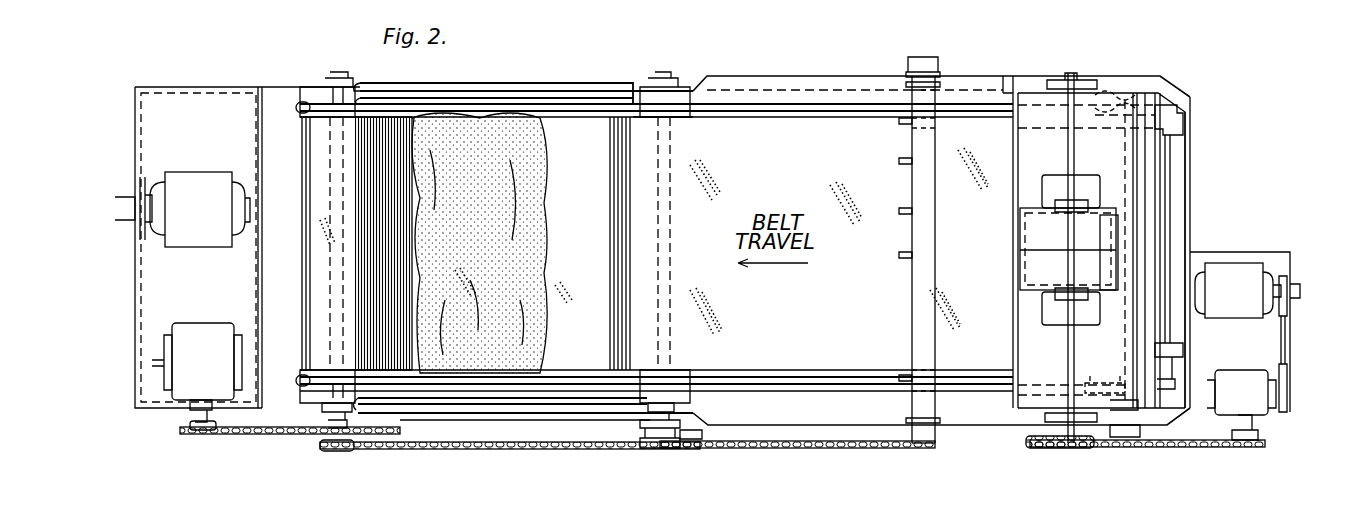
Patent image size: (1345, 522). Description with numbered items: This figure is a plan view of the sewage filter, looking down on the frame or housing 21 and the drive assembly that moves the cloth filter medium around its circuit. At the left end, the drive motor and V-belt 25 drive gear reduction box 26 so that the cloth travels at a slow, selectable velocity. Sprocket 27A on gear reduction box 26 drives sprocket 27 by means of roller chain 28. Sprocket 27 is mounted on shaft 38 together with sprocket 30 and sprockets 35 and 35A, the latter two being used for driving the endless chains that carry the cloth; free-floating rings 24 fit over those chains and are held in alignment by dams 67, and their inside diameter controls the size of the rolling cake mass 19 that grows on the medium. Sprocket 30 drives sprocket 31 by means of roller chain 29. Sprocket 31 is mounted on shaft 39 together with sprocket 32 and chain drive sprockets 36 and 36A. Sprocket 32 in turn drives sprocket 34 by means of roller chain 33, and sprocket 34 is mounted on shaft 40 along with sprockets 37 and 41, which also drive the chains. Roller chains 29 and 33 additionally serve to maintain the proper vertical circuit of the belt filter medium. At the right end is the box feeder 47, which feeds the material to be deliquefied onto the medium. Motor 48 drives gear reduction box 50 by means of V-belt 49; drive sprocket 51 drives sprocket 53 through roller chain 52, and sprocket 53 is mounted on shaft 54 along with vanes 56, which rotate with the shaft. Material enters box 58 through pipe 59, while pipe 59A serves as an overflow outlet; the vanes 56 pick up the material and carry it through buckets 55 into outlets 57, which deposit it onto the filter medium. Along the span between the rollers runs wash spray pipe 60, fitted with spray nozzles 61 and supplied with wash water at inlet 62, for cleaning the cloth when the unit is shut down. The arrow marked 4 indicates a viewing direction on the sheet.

The direction arrow / section indicator 4 is at (1222, 154).
The rolling cake mass 19 is at (496, 214).
The frame or housing 21 is at (231, 86).
The free-floating rings 24 is at (576, 84).
The drive motor and V-belt 25 is at (188, 156).
The gear reduction box 26 is at (180, 372).
The sprocket 27 is at (306, 449).
The sprocket 27A is at (202, 440).
The roller chain 28 is at (250, 440).
The roller chain 29 is at (506, 448).
The sprocket 30 is at (342, 450).
The sprocket 31 is at (656, 446).
The sprocket 32 is at (690, 438).
The roller chain 33 is at (826, 446).
The sprocket 34 is at (1130, 438).
The sprocket 35 is at (312, 372).
The sprocket 35A is at (314, 122).
The chain drive sprocket 36 is at (690, 378).
The chain drive sprocket 36A is at (695, 117).
The sprocket 37 is at (1097, 392).
The shaft 38 is at (335, 200).
The shaft 39 is at (662, 236).
The shaft 40 is at (1112, 252).
The sprocket 41 is at (1106, 108).
The box feeder 47 is at (1001, 254).
The motor 48 is at (1248, 282).
The V-belt 49 is at (1285, 355).
The gear reduction box 50 is at (1258, 398).
The drive sprocket 51 is at (1252, 448).
The roller chain 52 is at (1195, 448).
The sprocket 53 is at (1058, 450).
The shaft 54 is at (1067, 346).
The buckets 55 is at (1106, 208).
The vanes 56 is at (1120, 232).
The outlets 57 is at (1056, 190).
The box 58 is at (1150, 170).
The pipe 59 is at (1183, 356).
The pipe 59A is at (1178, 140).
The wash spray pipe 60 is at (934, 254).
The spray nozzles 61 is at (900, 161).
The inlet 62 is at (918, 442).
The dams 67 is at (302, 102).